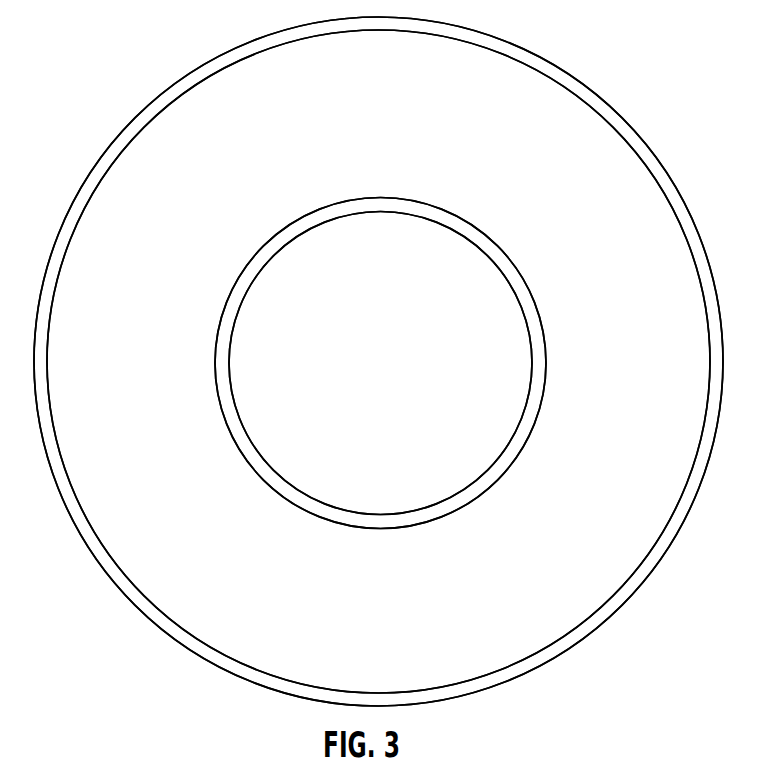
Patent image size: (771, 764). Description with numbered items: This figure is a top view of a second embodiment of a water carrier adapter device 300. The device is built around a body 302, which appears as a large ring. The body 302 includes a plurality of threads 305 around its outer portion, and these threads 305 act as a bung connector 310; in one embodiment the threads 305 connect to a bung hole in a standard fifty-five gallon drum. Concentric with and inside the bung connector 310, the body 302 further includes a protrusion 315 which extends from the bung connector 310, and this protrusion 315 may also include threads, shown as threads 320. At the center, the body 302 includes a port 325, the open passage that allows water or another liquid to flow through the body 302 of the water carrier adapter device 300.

The water carrier adapter device 300 is at (82, 36).
The body 302 is at (284, 44).
The threads 305 is at (500, 38).
The bung connector 310 is at (566, 123).
The protrusion 315 is at (490, 257).
The threads 320 is at (505, 473).
The port 325 is at (320, 467).